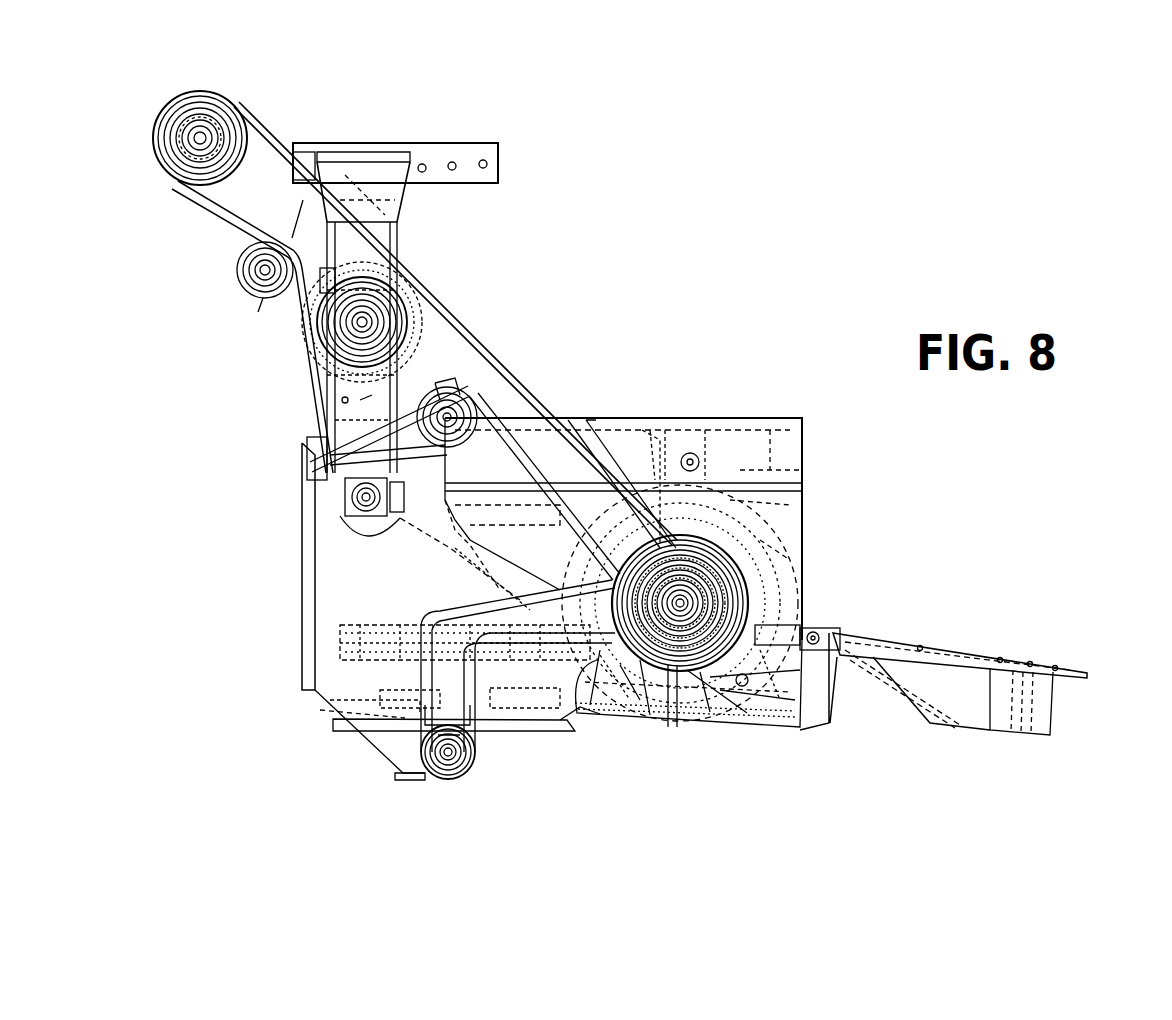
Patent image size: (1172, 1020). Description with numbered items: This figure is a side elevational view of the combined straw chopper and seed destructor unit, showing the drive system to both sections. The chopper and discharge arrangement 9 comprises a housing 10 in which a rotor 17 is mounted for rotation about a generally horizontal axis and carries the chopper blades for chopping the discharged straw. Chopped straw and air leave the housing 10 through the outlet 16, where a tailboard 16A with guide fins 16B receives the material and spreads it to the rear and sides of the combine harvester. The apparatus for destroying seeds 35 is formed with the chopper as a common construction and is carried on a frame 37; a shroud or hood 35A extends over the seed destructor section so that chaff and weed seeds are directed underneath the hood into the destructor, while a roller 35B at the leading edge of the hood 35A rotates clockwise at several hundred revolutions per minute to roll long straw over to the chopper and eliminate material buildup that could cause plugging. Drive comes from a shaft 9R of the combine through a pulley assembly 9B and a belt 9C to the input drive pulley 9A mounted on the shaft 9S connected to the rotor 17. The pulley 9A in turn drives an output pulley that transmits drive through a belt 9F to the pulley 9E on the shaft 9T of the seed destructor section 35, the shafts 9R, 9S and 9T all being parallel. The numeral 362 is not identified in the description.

The chopper and discharge arrangement 9 is at (738, 396).
The shaft of the combine 9R is at (227, 95).
The pulley assembly 9B is at (425, 279).
The belt 9C is at (517, 390).
The shaft 9S is at (713, 600).
The belt 9F is at (547, 587).
The input drive pulley 9A is at (597, 717).
The pulley 9E is at (463, 775).
The shaft 9T is at (440, 782).
The housing 10 is at (785, 528).
The outlet 16 is at (858, 746).
The tailboard 16A is at (983, 655).
The guide fins 16B is at (1037, 702).
The rotor 17 is at (672, 725).
The apparatus for destroying seeds 35 is at (258, 613).
The shroud or hood 35A is at (450, 548).
The roller 35B is at (360, 515).
The frame 37 is at (360, 707).
The bottom bracket 362 is at (403, 772).